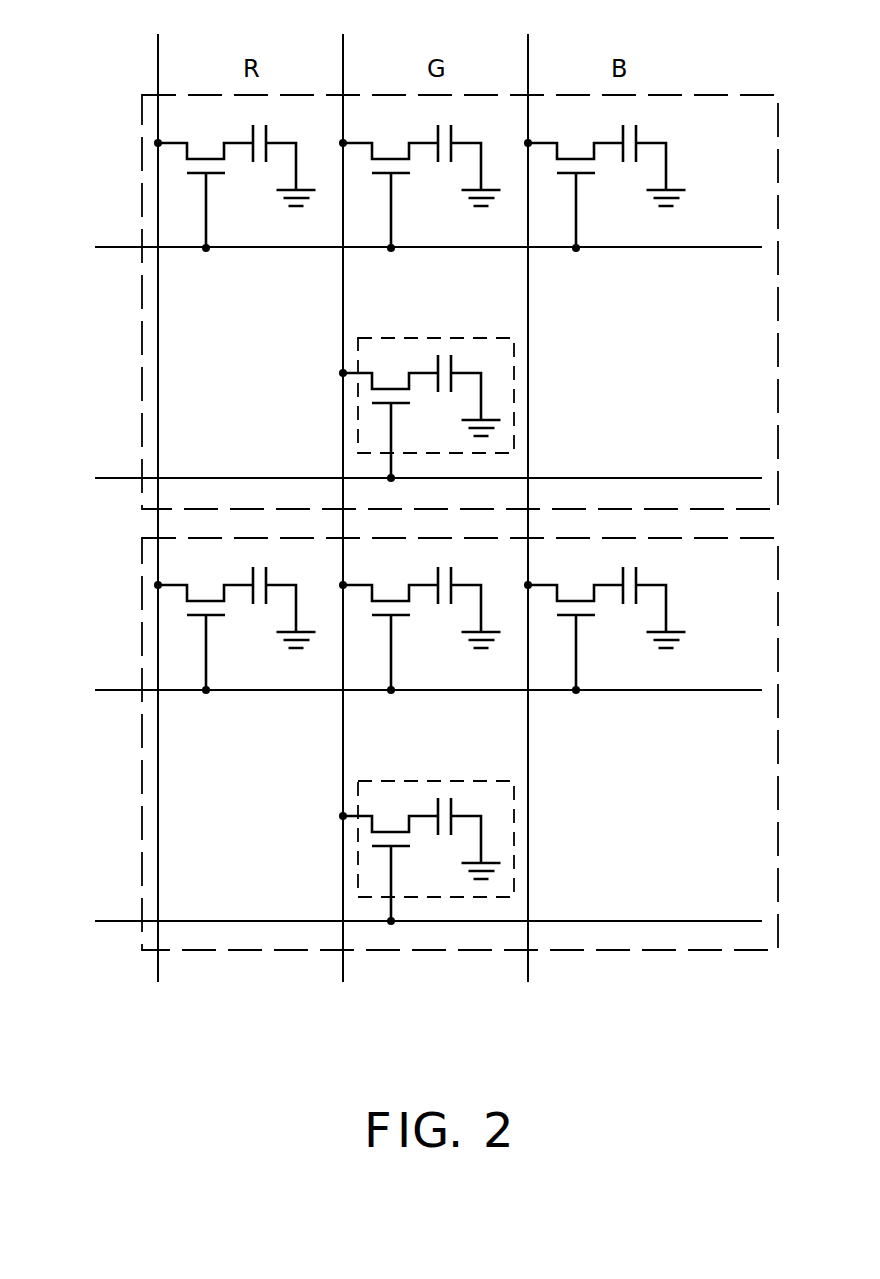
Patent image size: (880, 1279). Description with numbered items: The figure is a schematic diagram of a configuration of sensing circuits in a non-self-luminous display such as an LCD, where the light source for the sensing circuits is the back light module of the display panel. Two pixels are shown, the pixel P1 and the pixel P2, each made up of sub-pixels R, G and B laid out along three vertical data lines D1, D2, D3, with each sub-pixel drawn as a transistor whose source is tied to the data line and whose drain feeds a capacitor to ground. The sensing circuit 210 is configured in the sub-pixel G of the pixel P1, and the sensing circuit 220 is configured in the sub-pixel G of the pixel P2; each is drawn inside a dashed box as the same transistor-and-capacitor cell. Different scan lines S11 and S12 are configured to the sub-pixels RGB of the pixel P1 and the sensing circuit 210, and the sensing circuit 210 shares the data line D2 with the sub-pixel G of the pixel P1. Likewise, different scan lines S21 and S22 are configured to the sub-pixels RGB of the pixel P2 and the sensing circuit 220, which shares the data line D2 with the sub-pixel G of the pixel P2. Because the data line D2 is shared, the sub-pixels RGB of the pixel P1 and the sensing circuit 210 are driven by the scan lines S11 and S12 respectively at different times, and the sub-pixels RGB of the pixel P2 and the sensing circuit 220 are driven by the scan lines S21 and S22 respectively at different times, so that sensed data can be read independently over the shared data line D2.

The sensing circuit 210 is at (435, 336).
The sensing circuit 220 is at (435, 779).
The data line D1 is at (159, 495).
The data line D2 is at (343, 495).
The data line D3 is at (528, 495).
The scan line S11 is at (402, 250).
The scan line S12 is at (402, 481).
The scan line S21 is at (402, 693).
The scan line S22 is at (402, 924).
The pixel P1 is at (138, 139).
The pixel P2 is at (138, 584).